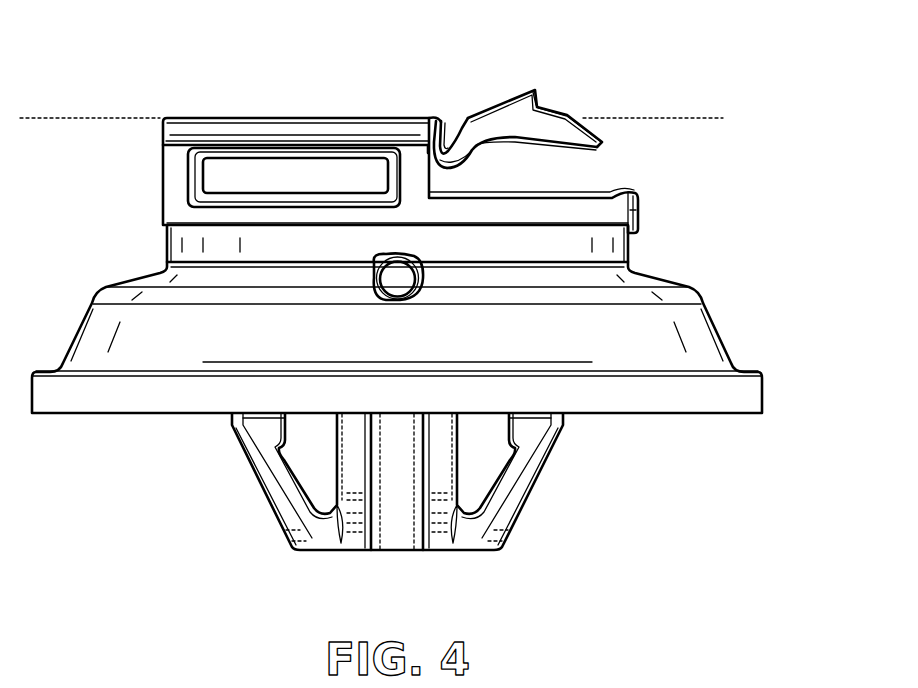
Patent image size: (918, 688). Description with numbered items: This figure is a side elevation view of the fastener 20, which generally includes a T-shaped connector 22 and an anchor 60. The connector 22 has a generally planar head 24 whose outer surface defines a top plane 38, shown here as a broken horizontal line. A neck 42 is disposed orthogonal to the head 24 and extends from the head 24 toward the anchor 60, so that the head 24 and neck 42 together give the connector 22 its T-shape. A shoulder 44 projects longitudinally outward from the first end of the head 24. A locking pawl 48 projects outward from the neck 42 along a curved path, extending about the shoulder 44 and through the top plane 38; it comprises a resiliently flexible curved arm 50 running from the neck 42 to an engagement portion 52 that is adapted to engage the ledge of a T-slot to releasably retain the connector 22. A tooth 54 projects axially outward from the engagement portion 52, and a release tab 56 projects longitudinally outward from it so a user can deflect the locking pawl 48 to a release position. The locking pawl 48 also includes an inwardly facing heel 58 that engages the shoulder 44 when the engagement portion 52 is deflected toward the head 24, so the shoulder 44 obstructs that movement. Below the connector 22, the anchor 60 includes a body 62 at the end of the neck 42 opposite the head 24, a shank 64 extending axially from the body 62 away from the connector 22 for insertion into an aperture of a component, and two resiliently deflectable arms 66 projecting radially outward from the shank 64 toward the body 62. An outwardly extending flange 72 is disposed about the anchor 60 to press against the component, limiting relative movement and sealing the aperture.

The fastener 20 is at (704, 63).
The connector 22 is at (113, 183).
The head 24 is at (231, 132).
The top plane 38 is at (113, 116).
The neck 42 is at (175, 203).
The shoulder 44 is at (435, 118).
The locking pawl 48 is at (508, 90).
The curved arm 50 is at (460, 165).
The engagement portion 52 is at (527, 127).
The tooth 54 is at (540, 107).
The release tab 56 is at (578, 118).
The heel 58 is at (460, 117).
The anchor 60 is at (189, 471).
The body 62 is at (617, 215).
The shank 64 is at (395, 533).
The arms 66 is at (280, 512).
The flange 72 is at (700, 343).